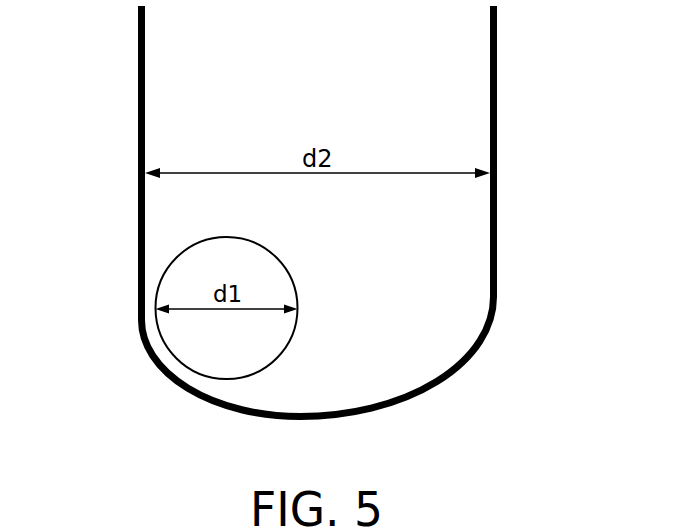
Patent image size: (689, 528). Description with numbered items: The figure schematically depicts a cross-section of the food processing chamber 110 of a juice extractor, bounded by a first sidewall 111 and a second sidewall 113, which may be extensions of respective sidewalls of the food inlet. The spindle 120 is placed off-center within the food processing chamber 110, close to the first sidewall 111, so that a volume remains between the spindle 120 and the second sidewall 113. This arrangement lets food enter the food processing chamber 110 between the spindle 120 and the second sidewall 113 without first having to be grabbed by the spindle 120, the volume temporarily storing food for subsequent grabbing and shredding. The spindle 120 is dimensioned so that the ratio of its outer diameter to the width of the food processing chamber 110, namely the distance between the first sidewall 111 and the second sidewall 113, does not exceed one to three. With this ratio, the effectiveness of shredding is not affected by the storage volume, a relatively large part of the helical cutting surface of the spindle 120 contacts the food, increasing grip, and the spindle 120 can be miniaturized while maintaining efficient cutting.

The food processing chamber 110 is at (450, 330).
The first sidewall 111 is at (138, 65).
The second sidewall 113 is at (497, 66).
The spindle 120 is at (167, 329).